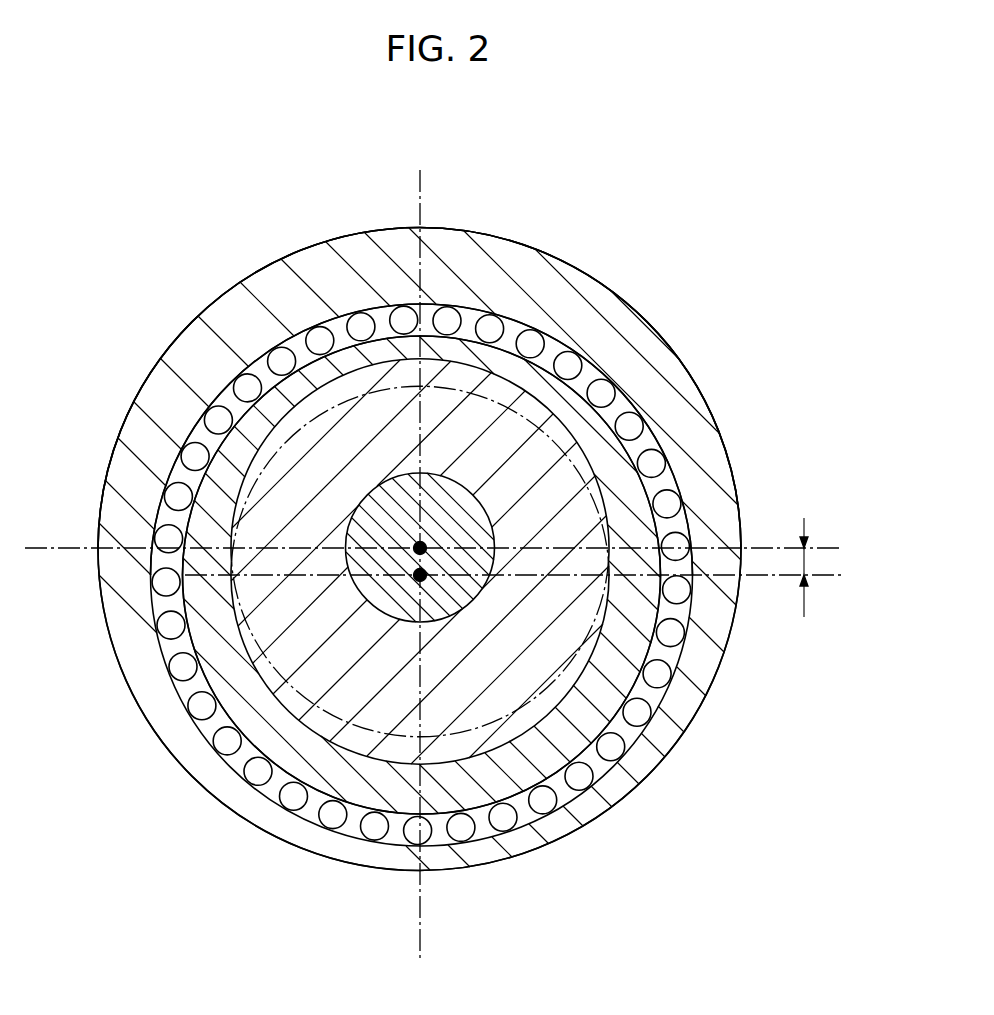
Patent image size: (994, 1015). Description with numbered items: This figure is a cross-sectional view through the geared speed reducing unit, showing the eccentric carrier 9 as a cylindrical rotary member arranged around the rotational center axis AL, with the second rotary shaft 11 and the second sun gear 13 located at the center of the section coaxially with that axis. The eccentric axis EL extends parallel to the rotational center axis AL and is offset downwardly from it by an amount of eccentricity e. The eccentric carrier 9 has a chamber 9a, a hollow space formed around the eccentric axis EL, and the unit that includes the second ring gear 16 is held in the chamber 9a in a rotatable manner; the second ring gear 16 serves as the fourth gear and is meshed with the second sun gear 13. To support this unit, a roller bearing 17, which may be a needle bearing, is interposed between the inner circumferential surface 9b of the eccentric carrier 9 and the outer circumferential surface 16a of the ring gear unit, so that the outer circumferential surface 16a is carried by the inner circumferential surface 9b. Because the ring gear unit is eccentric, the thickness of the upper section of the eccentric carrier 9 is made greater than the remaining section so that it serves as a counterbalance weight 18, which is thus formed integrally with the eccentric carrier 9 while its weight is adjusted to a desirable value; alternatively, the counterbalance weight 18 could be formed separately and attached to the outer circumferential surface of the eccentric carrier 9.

The eccentric carrier 9 is at (567, 306).
The chamber 9a is at (195, 447).
The inner circumferential surface 9b is at (343, 303).
The second rotary shaft 11 is at (455, 508).
The second sun gear 13 is at (355, 707).
The second ring gear 16 is at (265, 727).
The outer circumferential surface 16a is at (675, 700).
The roller bearing 17 is at (165, 628).
The counterbalance weight 18 is at (427, 260).
The rotational center axis AL is at (233, 398).
The eccentric axis EL is at (565, 795).
The amount of eccentricity e is at (810, 567).